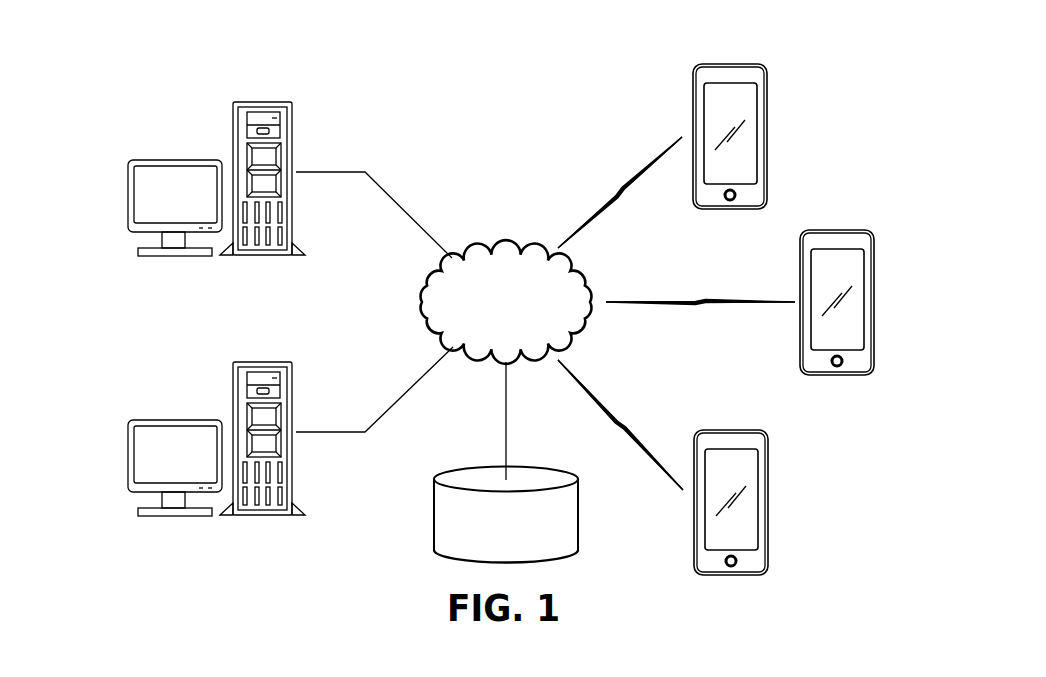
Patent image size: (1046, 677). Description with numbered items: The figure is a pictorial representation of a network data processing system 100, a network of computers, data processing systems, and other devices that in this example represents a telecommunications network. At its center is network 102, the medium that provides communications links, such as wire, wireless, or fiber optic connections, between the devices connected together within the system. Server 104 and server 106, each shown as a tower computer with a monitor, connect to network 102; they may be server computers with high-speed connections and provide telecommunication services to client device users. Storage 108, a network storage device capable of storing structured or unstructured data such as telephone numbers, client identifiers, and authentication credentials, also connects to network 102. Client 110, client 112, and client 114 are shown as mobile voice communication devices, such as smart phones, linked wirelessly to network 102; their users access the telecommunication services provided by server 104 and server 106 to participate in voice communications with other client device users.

The network data processing system 100 is at (366, 74).
The network 102 is at (483, 250).
The server 104 is at (127, 196).
The server 106 is at (127, 455).
The storage 108 is at (434, 514).
The client 110 is at (768, 136).
The client 112 is at (875, 300).
The client 114 is at (768, 500).